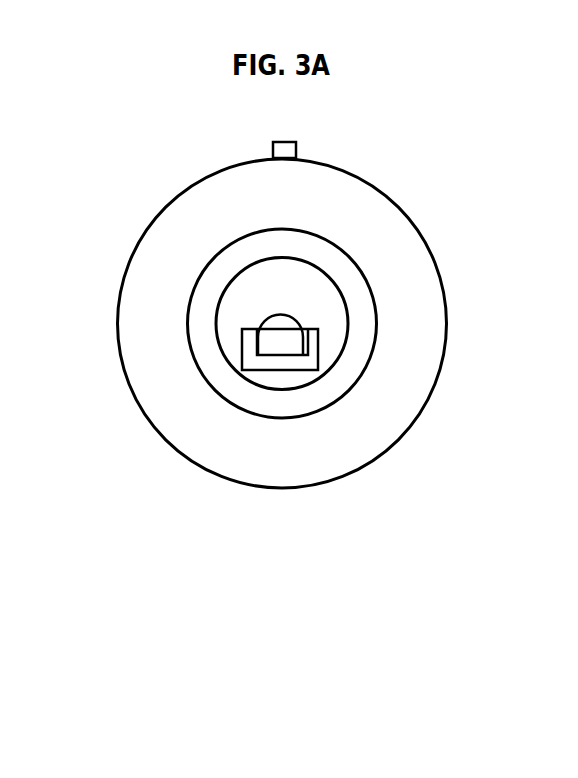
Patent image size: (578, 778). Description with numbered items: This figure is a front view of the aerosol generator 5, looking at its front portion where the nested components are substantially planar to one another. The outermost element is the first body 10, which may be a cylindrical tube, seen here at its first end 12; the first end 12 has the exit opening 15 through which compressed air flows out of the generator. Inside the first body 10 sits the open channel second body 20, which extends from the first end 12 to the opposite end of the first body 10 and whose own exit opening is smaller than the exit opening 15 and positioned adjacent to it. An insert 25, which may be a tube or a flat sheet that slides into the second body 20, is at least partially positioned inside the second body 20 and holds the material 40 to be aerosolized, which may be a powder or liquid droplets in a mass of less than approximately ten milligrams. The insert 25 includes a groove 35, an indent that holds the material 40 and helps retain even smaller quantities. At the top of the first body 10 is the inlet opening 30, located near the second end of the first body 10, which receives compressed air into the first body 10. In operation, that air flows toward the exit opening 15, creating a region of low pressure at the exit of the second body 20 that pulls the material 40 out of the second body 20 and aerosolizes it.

The aerosol generator 5 is at (95, 238).
The first body 10 is at (409, 220).
The first end 12 is at (208, 222).
The exit opening 15 is at (285, 410).
The second body 20 is at (345, 348).
The insert 25 is at (341, 398).
The inlet opening 30 is at (297, 150).
The groove 35 is at (268, 372).
The material 40 is at (287, 328).